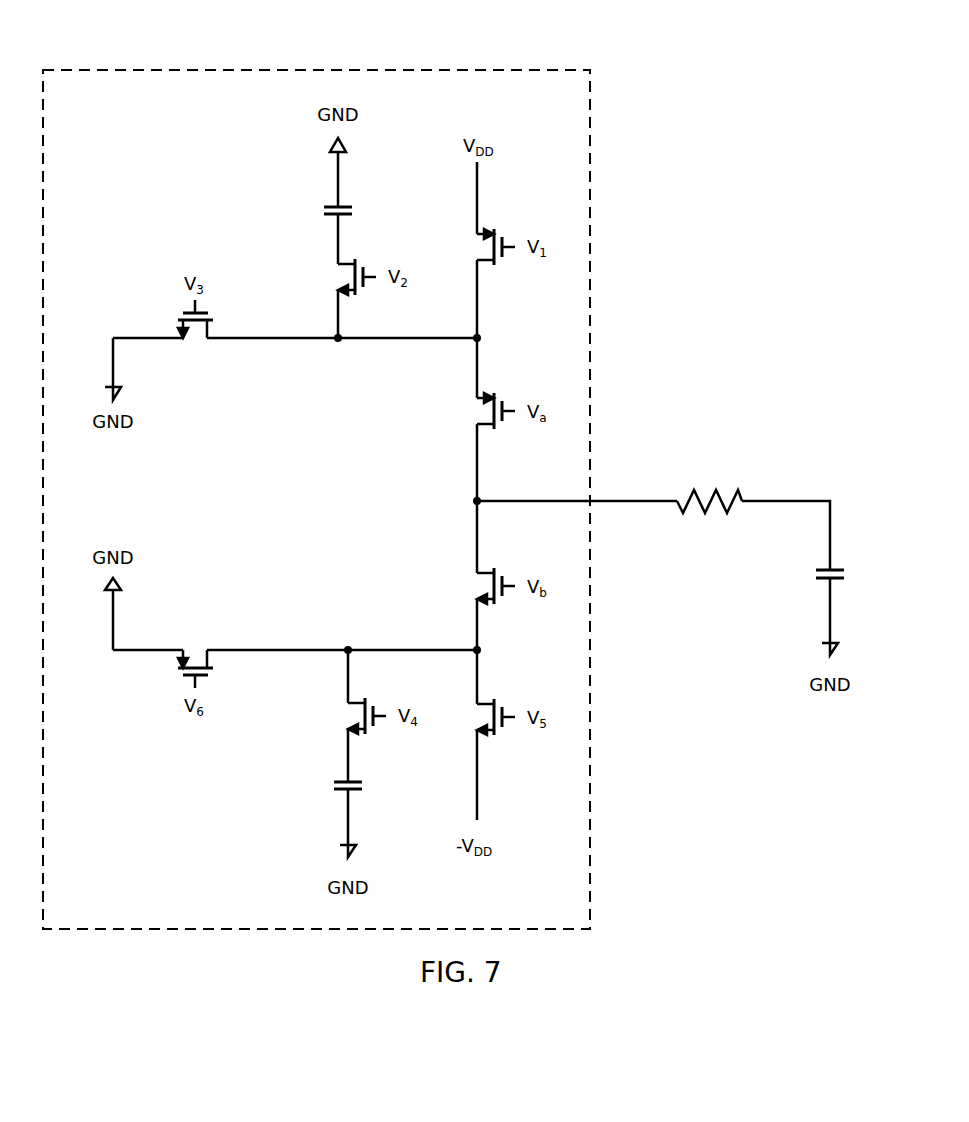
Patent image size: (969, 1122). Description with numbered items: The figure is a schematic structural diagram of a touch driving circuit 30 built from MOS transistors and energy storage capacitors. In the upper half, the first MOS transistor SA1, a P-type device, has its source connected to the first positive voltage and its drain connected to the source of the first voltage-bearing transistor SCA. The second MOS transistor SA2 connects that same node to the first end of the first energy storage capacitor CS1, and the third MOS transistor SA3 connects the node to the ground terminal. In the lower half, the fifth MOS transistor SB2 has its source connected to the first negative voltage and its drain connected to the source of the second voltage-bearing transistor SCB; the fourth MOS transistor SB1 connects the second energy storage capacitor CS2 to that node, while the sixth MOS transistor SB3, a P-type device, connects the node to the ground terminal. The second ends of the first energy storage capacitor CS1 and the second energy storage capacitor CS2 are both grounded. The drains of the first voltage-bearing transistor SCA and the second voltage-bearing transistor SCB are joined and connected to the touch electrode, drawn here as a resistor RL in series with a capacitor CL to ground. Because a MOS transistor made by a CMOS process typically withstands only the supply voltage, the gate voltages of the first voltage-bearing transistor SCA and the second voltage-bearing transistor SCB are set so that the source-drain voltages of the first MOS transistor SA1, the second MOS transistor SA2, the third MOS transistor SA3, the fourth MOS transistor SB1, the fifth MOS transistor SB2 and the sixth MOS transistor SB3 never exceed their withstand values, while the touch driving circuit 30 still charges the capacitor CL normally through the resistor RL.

The touch driving circuit 30 is at (590, 70).
The first MOS transistor SA1 is at (477, 247).
The second MOS transistor SA2 is at (336, 277).
The third MOS transistor SA3 is at (195, 335).
The fourth MOS transistor SB1 is at (347, 716).
The fifth MOS transistor SB2 is at (477, 717).
The sixth MOS transistor SB3 is at (195, 654).
The first voltage-bearing transistor SCA is at (476, 411).
The second voltage-bearing transistor SCB is at (476, 586).
The first energy storage capacitor CS1 is at (314, 211).
The second energy storage capacitor CS2 is at (327, 783).
The resistor RL is at (709, 486).
The capacitor CL is at (847, 577).